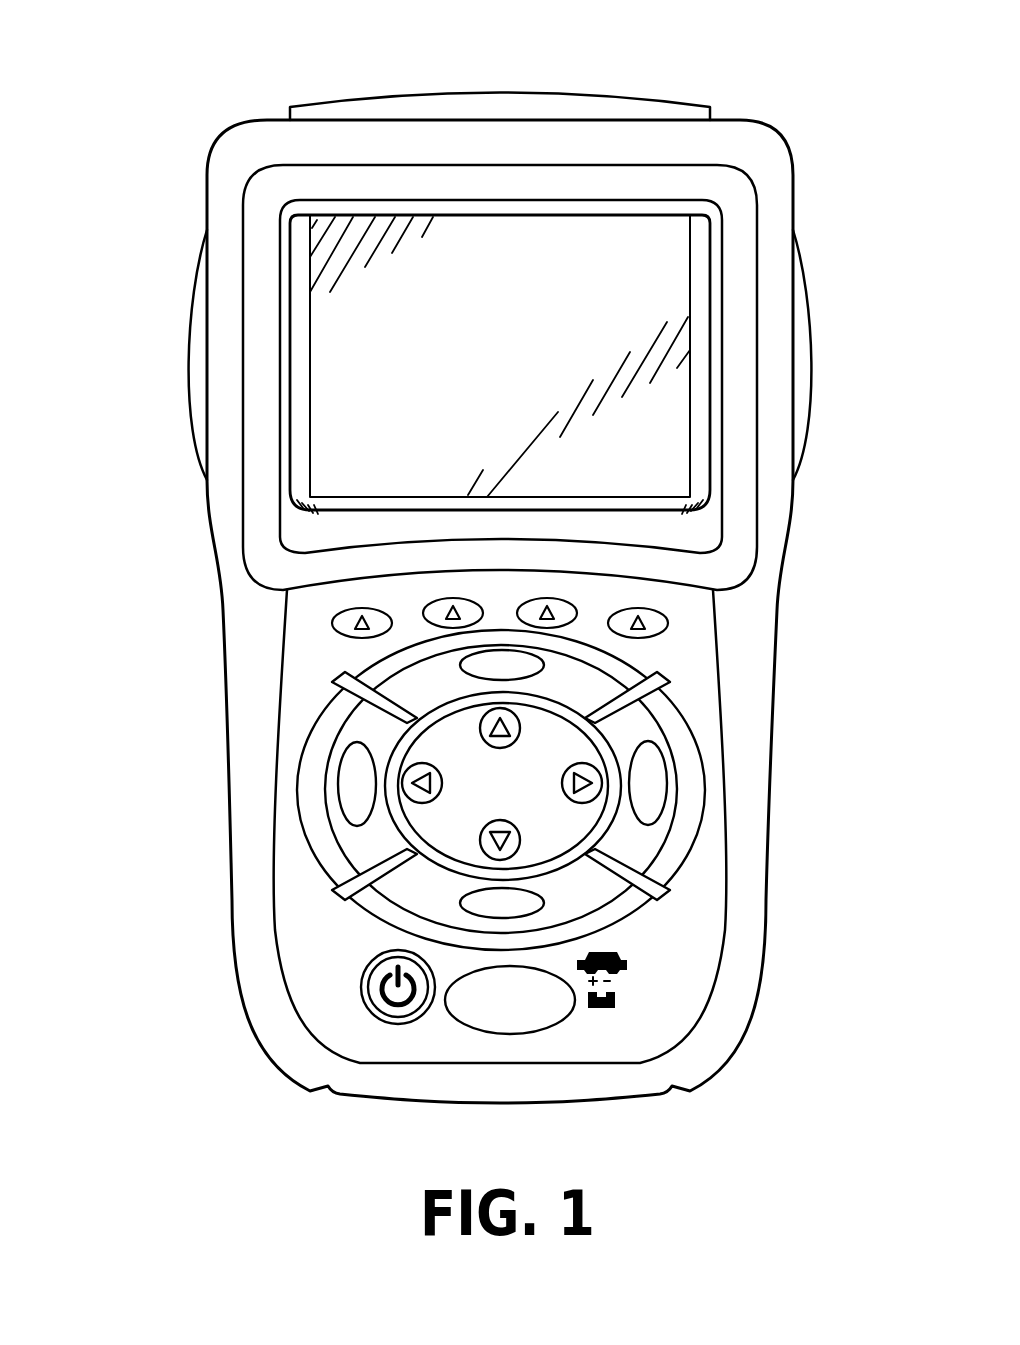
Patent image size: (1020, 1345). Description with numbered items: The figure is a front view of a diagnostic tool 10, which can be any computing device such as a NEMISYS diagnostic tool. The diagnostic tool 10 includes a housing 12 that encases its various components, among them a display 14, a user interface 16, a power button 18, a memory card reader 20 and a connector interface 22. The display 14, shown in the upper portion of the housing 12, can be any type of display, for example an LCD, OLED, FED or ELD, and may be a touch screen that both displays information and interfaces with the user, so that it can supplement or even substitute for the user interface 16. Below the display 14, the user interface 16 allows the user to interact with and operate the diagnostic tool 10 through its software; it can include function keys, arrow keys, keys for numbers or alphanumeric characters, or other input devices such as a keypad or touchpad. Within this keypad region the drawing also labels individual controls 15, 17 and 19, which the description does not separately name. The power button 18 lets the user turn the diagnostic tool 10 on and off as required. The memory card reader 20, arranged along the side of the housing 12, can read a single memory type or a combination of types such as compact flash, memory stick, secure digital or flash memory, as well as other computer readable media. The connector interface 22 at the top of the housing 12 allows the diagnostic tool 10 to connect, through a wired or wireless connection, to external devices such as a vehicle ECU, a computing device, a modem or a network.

The diagnostic tool 10 is at (106, 124).
The housing 12 is at (773, 130).
The display 14 is at (662, 448).
The soft keys 15 is at (333, 623).
The user interface 16 is at (632, 727).
The help key 17 is at (338, 784).
The power button 18 is at (376, 988).
The directional keypad 19 is at (522, 838).
The memory card reader 20 is at (187, 350).
The connector interface 22 is at (500, 90).